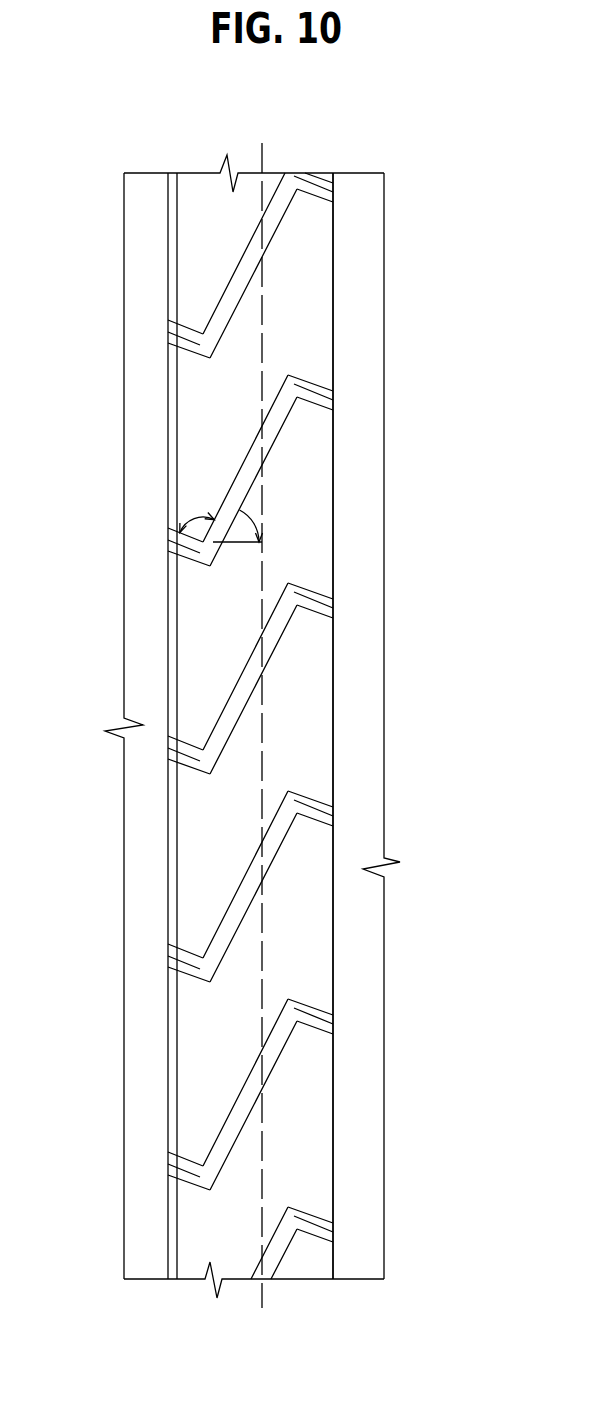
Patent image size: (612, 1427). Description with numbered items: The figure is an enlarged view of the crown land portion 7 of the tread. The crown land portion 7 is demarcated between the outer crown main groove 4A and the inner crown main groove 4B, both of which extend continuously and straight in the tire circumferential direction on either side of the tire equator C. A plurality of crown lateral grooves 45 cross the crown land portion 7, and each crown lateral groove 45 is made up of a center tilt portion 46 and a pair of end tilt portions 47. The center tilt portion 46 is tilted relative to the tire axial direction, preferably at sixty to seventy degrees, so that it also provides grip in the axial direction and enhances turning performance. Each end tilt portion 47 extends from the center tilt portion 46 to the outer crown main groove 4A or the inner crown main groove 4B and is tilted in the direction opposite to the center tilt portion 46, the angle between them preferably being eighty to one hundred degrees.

The outer crown main groove 4A is at (148, 218).
The inner crown main groove 4B is at (358, 218).
The crown land portion 7 is at (208, 218).
The tire equator C is at (264, 710).
The crown lateral groove 45 is at (283, 726).
The center tilt portion 46 is at (247, 462).
The end tilt portion 47 is at (318, 390).